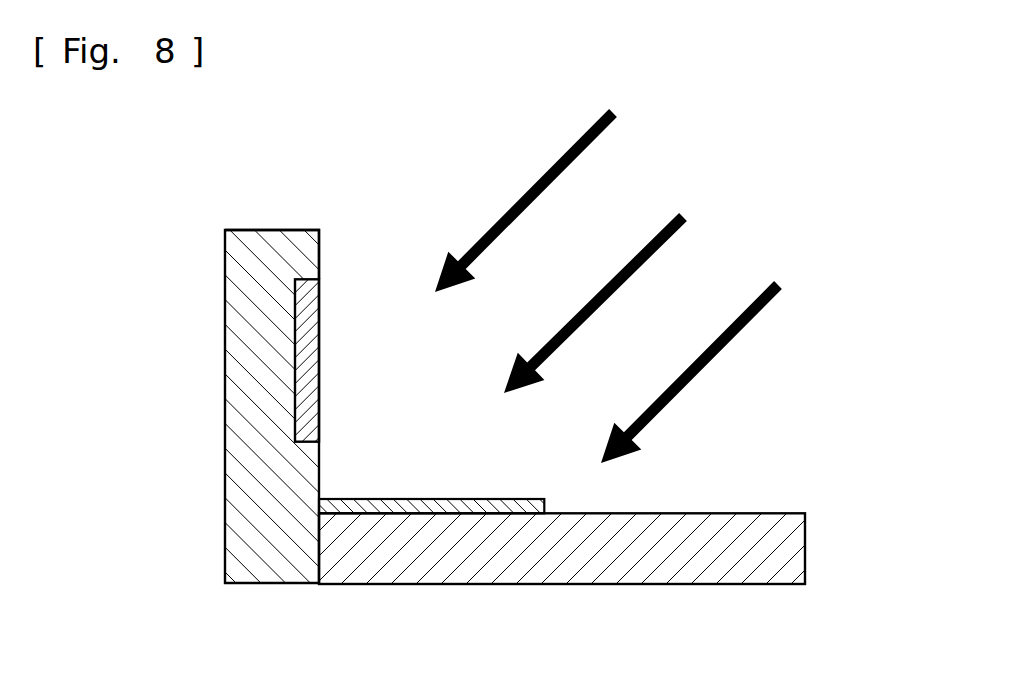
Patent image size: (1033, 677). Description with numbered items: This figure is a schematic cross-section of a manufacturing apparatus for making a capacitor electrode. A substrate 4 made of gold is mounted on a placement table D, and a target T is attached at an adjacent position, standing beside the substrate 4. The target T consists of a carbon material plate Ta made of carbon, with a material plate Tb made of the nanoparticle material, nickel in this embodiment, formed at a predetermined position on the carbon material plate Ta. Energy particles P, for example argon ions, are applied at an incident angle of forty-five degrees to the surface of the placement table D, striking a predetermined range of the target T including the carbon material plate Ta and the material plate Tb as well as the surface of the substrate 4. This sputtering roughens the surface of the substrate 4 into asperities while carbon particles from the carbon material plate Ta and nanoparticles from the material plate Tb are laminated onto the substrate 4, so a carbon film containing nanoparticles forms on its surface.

The target T is at (227, 262).
The carbon material plate Ta is at (319, 253).
The material plate Tb is at (319, 367).
The substrate 4 is at (443, 499).
The energy particles P is at (538, 175).
The placement table D is at (732, 586).